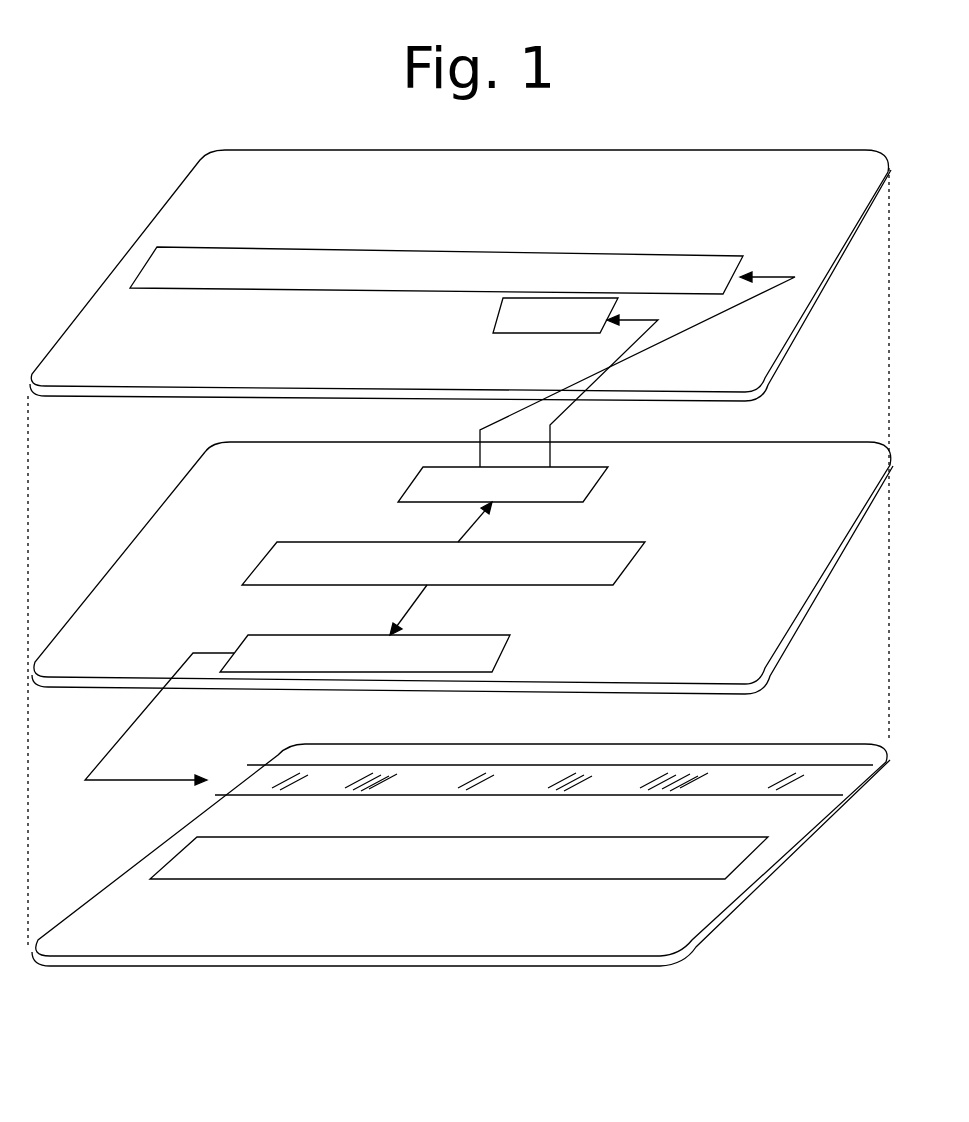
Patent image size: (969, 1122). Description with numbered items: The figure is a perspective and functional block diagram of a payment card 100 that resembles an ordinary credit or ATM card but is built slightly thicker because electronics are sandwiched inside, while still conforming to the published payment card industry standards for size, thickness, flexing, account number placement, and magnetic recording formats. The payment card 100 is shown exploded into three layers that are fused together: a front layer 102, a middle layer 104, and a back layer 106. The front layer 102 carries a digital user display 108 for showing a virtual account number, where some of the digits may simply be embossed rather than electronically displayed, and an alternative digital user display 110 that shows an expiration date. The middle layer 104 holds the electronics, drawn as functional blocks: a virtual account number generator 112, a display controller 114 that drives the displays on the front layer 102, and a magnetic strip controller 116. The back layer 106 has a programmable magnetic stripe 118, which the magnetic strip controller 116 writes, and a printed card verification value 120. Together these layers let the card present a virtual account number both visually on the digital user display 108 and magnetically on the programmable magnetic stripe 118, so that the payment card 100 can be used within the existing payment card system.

The payment card 100 is at (140, 130).
The front layer 102 is at (113, 253).
The middle layer 104 is at (133, 530).
The back layer 106 is at (125, 866).
The digital user display 108 is at (236, 290).
The alternative digital user display 110 is at (514, 334).
The virtual account number generator 112 is at (266, 556).
The display controller 114 is at (425, 478).
The magnetic strip controller 116 is at (240, 645).
The programmable magnetic stripe 118 is at (382, 798).
The printed card verification value (CVV) 120 is at (680, 840).